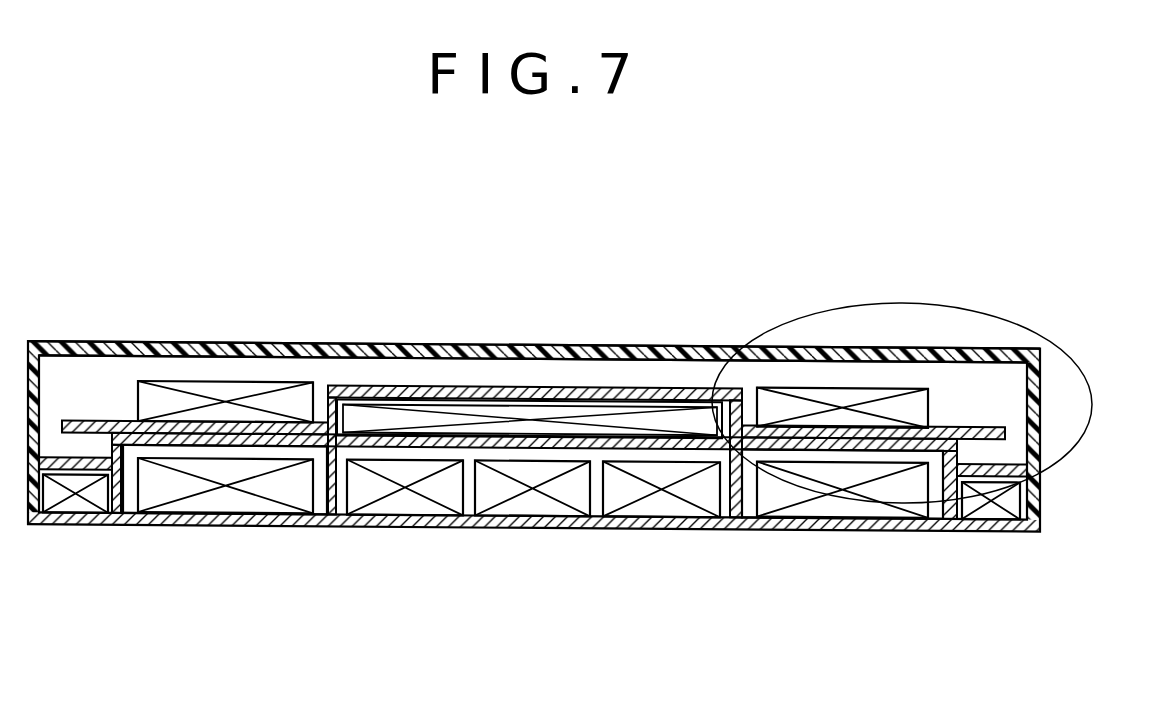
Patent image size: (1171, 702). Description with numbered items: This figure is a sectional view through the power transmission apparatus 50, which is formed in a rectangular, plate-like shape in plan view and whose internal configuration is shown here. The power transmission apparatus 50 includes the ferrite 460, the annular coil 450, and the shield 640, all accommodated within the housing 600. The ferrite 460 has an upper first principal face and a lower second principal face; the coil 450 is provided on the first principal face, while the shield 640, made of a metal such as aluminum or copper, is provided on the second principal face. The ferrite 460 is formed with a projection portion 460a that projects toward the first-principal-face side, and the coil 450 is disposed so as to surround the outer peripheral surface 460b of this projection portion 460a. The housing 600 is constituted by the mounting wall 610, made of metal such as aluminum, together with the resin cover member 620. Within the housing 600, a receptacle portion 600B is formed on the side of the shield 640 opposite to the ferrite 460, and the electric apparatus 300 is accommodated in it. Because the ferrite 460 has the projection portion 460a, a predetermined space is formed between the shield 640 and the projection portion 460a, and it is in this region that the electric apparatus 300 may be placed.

The power transmission apparatus 50 is at (546, 434).
The electric apparatus 300 is at (527, 403).
The coil 450 is at (218, 378).
The ferrite 460 is at (533, 327).
The projection portion 460a is at (660, 378).
The outer peripheral surface 460b is at (103, 419).
The housing 600 is at (1030, 342).
The receptacle portion 600B is at (597, 499).
The mounting wall 610 is at (742, 521).
The cover member 620 is at (915, 345).
The shield 640 is at (413, 429).